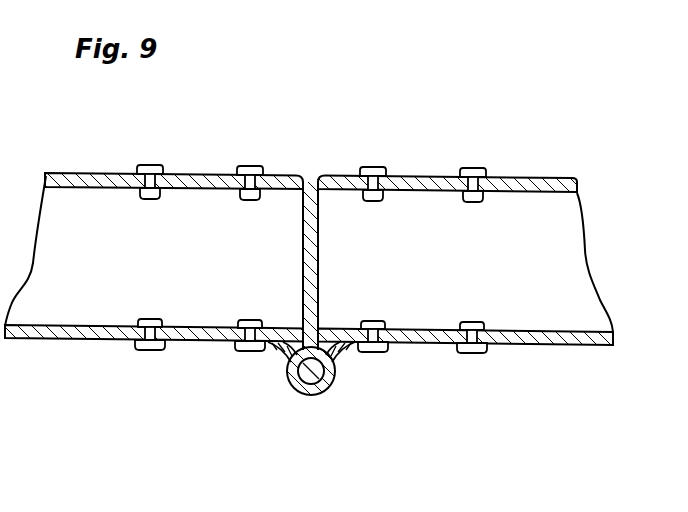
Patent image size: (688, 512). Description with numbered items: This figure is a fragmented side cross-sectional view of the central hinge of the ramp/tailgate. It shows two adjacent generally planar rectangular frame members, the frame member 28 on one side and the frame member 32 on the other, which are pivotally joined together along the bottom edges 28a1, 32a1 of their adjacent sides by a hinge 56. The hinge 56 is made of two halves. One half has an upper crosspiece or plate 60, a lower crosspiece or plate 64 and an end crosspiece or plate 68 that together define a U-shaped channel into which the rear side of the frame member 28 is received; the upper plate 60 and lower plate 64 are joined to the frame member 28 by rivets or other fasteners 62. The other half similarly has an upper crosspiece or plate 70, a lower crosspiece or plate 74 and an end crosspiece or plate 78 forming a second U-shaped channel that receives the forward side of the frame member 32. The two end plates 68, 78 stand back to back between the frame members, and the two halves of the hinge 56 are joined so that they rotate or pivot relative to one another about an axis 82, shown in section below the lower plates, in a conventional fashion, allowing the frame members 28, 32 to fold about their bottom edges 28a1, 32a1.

The frame member 28 is at (462, 260).
The frame member 32 is at (158, 256).
The hinge 56 is at (337, 418).
The upper plate 60 is at (428, 170).
The rivets 62 is at (365, 167).
The lower plate 64 is at (432, 350).
The end plate 68 is at (318, 233).
The upper plate 70 is at (182, 168).
The lower plate 74 is at (187, 343).
The end plate 78 is at (302, 236).
The axis 82 is at (303, 394).
The bottom edge 32a1 is at (280, 313).
The bottom edge 28a1 is at (333, 313).